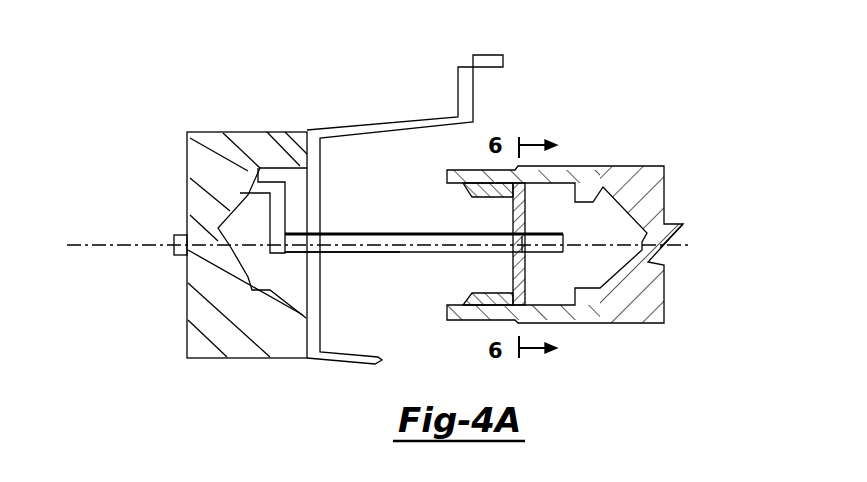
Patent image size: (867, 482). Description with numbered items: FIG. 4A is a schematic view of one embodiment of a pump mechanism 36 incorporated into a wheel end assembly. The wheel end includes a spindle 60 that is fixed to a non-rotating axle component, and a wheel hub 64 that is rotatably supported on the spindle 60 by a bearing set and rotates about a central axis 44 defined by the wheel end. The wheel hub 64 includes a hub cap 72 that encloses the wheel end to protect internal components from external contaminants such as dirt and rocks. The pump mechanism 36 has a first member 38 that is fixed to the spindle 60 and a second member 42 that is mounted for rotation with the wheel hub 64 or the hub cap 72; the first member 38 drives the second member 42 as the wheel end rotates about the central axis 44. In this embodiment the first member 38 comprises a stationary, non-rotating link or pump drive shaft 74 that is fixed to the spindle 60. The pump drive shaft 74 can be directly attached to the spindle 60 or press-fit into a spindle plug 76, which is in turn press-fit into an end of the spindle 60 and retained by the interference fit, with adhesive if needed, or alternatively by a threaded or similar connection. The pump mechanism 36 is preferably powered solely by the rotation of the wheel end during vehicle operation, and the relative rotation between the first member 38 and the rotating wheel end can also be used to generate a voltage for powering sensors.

The pump mechanism 36 is at (155, 319).
The first member 38 is at (396, 228).
The second member 42 is at (213, 145).
The central axis 44 is at (120, 243).
The spindle 60 is at (593, 178).
The wheel hub 64 is at (490, 55).
The hub cap 72 is at (465, 98).
The pump drive shaft 74 is at (355, 253).
The spindle plug 76 is at (513, 222).